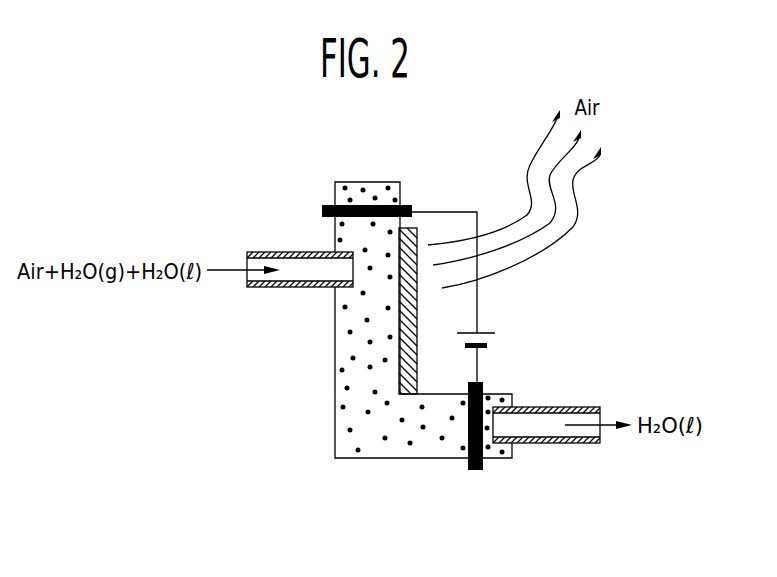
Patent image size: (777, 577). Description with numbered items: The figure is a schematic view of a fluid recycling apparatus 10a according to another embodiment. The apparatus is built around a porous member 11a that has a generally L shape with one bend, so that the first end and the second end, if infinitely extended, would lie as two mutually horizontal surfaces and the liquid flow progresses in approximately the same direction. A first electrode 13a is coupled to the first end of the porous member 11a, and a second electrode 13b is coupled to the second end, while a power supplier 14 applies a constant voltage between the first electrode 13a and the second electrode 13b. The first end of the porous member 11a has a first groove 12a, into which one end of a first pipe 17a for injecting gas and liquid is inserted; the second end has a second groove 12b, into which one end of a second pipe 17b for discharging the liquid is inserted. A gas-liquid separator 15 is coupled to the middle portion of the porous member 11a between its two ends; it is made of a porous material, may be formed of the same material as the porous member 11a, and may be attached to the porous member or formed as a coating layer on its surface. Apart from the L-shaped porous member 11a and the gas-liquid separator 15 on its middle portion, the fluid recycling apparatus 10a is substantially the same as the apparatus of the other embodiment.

The fluid recycling apparatus 10a is at (406, 340).
The porous member 11a is at (335, 400).
The first groove 12a is at (345, 290).
The second groove 12b is at (512, 402).
The first electrode 13a is at (408, 208).
The second electrode 13b is at (475, 470).
The power supplier 14 is at (495, 340).
The gas-liquid separator 15 is at (417, 312).
The first pipe 17a is at (283, 306).
The second pipe 17b is at (544, 435).